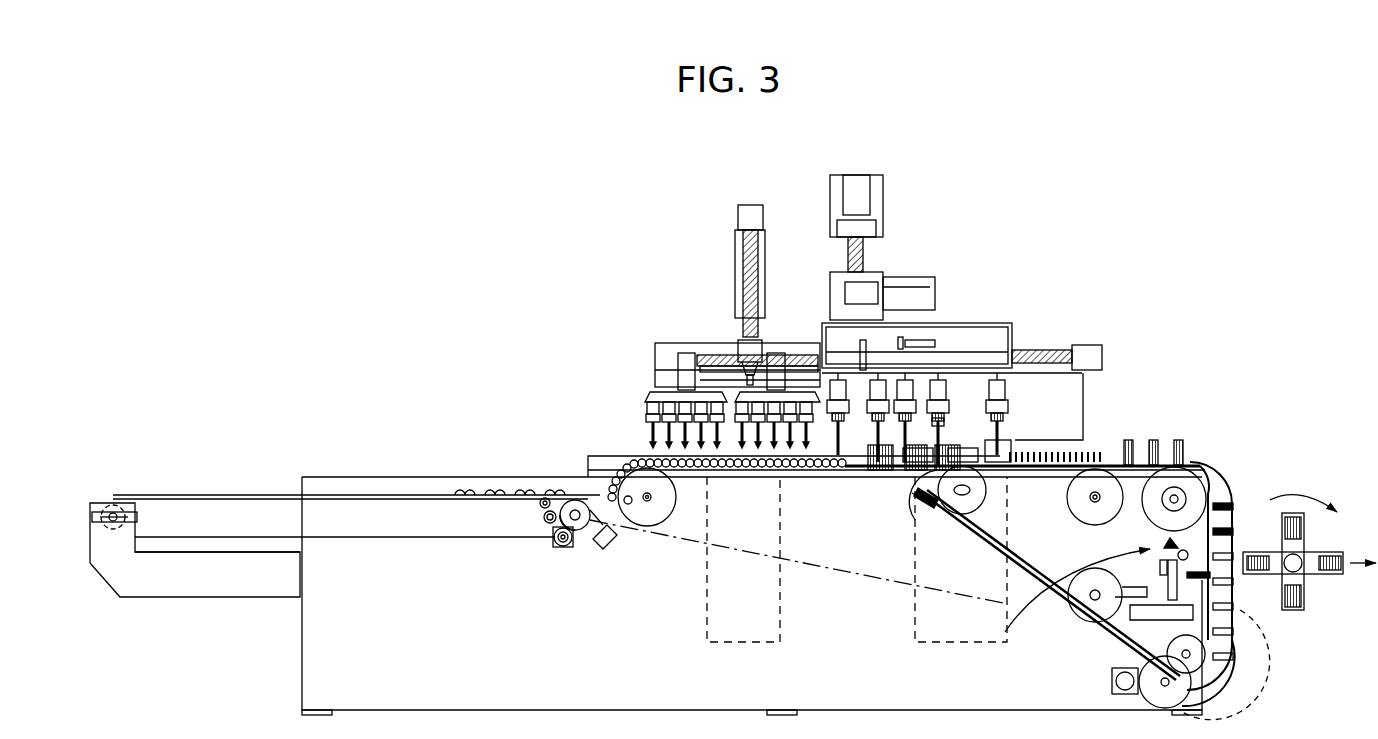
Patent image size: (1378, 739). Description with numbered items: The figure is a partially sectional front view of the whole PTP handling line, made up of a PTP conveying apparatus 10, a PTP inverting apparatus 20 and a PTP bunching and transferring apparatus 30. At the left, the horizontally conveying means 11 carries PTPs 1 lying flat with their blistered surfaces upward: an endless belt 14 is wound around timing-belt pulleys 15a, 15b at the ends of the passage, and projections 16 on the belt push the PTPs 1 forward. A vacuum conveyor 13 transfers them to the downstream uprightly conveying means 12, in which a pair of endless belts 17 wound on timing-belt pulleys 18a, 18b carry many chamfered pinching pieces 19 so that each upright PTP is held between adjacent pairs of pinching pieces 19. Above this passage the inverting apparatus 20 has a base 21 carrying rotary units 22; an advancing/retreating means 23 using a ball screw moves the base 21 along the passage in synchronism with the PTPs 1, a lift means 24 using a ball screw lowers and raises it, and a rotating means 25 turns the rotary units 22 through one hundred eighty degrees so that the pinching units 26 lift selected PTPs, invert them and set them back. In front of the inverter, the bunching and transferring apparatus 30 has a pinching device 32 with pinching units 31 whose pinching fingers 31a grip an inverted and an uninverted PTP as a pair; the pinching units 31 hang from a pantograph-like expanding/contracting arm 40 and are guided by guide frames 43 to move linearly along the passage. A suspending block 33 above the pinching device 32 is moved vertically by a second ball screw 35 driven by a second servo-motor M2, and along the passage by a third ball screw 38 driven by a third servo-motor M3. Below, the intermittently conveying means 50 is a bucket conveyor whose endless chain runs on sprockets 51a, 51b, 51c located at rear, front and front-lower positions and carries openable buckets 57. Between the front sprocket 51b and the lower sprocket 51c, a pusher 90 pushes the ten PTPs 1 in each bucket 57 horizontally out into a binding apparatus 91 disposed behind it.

The PTP 1 is at (470, 493).
The PTP conveying apparatus 10 is at (557, 393).
The horizontally conveying means 11 is at (215, 494).
The uprightly conveying means 12 is at (623, 440).
The vacuum conveyor 13 is at (602, 498).
The endless belt 14 is at (378, 477).
The timing-belt pulley 15a is at (560, 538).
The timing-belt pulley 15b is at (103, 495).
The projection 16 is at (440, 493).
The endless belt 17 is at (848, 472).
The timing-belt pulley 18a is at (1071, 504).
The timing-belt pulley 18b is at (645, 520).
The pinching piece 19 is at (614, 480).
The PTP inverting apparatus 20 is at (657, 300).
The base 21 is at (705, 368).
The rotary unit 22 is at (650, 398).
The advancing/retreating means 23 is at (712, 350).
The lift means 24 is at (765, 250).
The rotating means 25 is at (752, 345).
The pinching unit 26 is at (740, 442).
The PTP bunching and transferring apparatus 30 is at (972, 225).
The pinching unit 31 is at (940, 380).
The pinching finger 31a is at (940, 440).
The pinching device 32 is at (972, 345).
The suspending block 33 is at (912, 300).
The second ball screw 35 is at (865, 252).
The third ball screw 38 is at (1045, 350).
The expanding/contracting arm 40 is at (933, 345).
The guide frame 43 is at (863, 360).
The intermittently conveying means 50 is at (1132, 430).
The sprocket 51a is at (955, 515).
The sprocket 51b is at (1188, 488).
The sprocket 51c is at (1215, 662).
The bucket 57 is at (1160, 440).
The pusher 90 is at (1008, 612).
The binding apparatus 91 is at (1262, 532).
The second servo-motor M2 is at (856, 183).
The third servo-motor M3 is at (1087, 357).